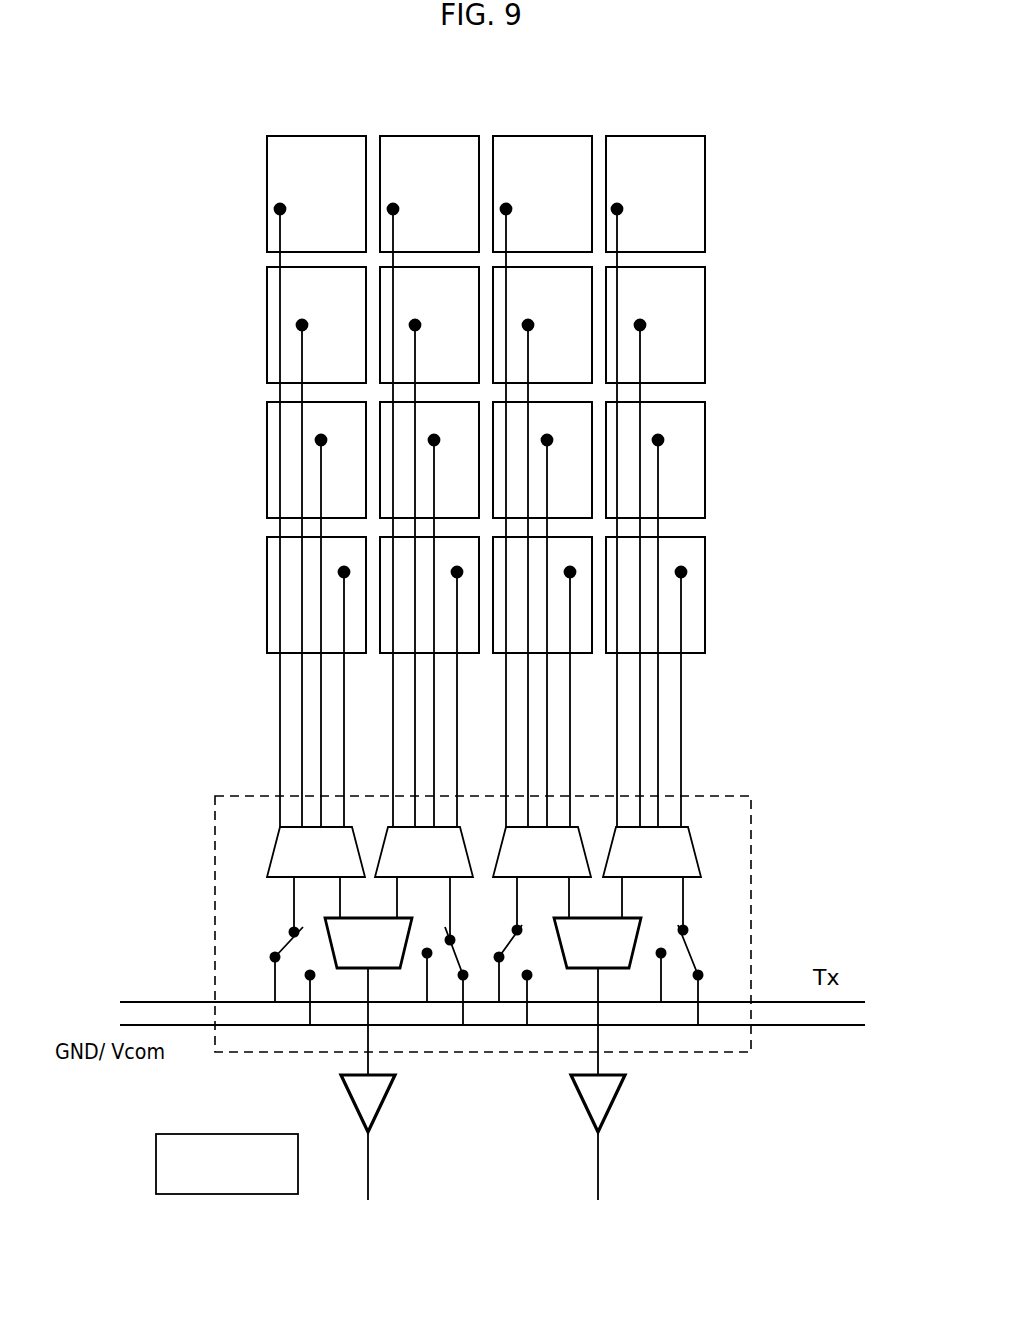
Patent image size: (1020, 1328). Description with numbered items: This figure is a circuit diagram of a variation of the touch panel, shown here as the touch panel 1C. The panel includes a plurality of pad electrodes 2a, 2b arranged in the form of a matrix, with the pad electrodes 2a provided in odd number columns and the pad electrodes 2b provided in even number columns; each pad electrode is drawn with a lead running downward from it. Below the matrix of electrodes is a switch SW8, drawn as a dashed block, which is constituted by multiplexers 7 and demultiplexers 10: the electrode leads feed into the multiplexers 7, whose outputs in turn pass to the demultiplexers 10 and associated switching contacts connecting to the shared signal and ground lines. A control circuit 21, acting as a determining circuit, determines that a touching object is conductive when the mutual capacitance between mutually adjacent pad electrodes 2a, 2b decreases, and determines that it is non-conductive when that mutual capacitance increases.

The touch panel (electrode array) 1C is at (705, 114).
The pad electrodes 2a is at (267, 192).
The pad electrodes 2b is at (706, 192).
The multiplexers 7 is at (270, 848).
The demultiplexers 10 is at (325, 918).
The switch SW8 is at (752, 820).
The control circuit 21 is at (222, 1194).